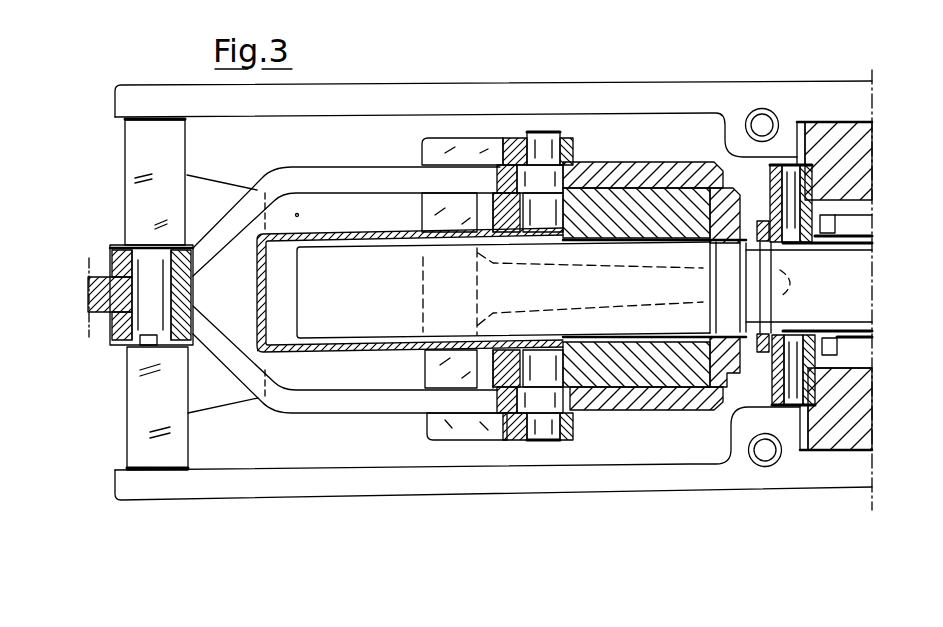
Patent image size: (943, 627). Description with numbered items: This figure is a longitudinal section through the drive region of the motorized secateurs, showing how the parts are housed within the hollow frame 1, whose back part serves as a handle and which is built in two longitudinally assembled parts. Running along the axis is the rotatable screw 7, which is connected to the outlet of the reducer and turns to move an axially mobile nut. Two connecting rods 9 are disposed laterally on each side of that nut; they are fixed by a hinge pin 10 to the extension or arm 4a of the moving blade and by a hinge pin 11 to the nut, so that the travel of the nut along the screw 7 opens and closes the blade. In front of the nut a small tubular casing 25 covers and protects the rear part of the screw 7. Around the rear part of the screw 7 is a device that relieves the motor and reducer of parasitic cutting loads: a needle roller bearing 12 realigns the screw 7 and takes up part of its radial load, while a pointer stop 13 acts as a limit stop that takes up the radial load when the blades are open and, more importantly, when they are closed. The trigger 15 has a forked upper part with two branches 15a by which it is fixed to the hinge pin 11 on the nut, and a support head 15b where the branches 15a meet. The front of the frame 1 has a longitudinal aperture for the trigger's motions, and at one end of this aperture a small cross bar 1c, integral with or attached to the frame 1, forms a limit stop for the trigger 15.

The hollow frame 1 is at (638, 90).
The small cross bar 1c is at (153, 148).
The extension or arm of the blade 4a is at (110, 298).
The rotatable screw 7 is at (418, 322).
The connecting rods 9 is at (351, 166).
The hinge pin 10 is at (118, 333).
The hinge pin 11 is at (548, 148).
The needle roller bearing 12 is at (851, 412).
The pointer stop 13 is at (795, 407).
The trigger 15 is at (601, 305).
The branches 15a is at (570, 138).
The support head 15b is at (462, 147).
The small tubular casing 25 is at (390, 345).